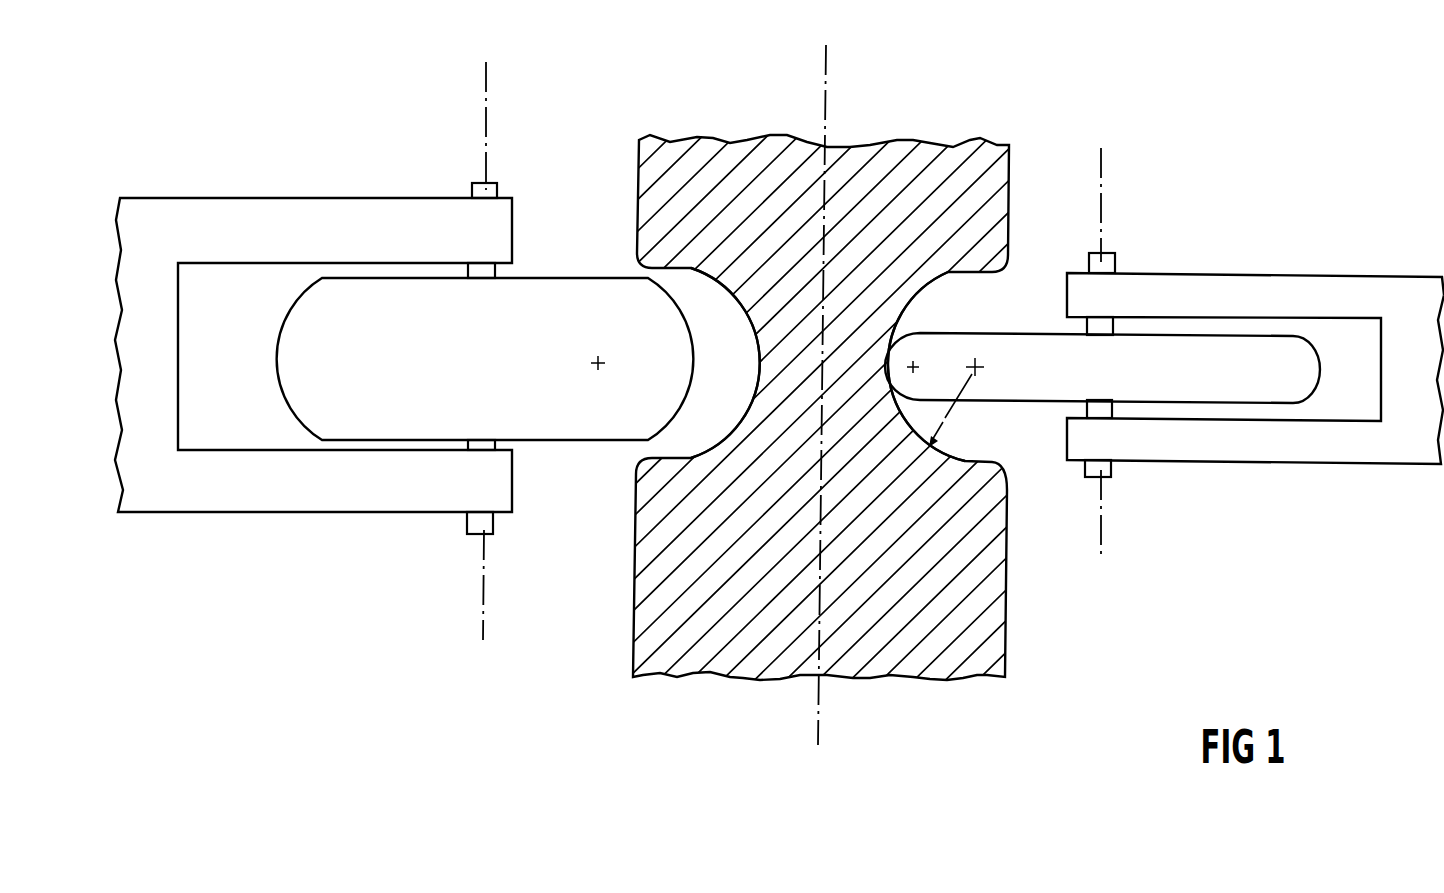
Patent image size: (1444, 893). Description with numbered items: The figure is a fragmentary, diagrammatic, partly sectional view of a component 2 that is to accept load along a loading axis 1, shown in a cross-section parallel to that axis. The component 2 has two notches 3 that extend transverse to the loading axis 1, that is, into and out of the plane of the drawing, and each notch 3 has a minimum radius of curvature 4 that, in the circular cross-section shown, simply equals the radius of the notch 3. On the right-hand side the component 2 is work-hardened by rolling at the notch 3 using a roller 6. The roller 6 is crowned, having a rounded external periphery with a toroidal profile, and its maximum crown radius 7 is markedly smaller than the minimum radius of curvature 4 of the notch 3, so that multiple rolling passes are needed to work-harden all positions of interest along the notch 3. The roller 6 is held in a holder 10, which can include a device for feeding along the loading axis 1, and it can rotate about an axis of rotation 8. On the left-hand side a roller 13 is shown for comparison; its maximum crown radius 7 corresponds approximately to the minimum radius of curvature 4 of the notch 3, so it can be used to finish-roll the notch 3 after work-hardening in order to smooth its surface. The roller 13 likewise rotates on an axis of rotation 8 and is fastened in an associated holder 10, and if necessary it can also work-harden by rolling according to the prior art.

The loading axis 1 is at (827, 80).
The component 2 is at (747, 168).
The notch 3 is at (742, 420).
The minimum radius of curvature 4 is at (947, 412).
The roller 6 is at (1012, 352).
The maximum crown radius 7 is at (673, 317).
The axis of rotation 8 is at (486, 77).
The holder 10 is at (155, 232).
The roller 13 is at (573, 296).